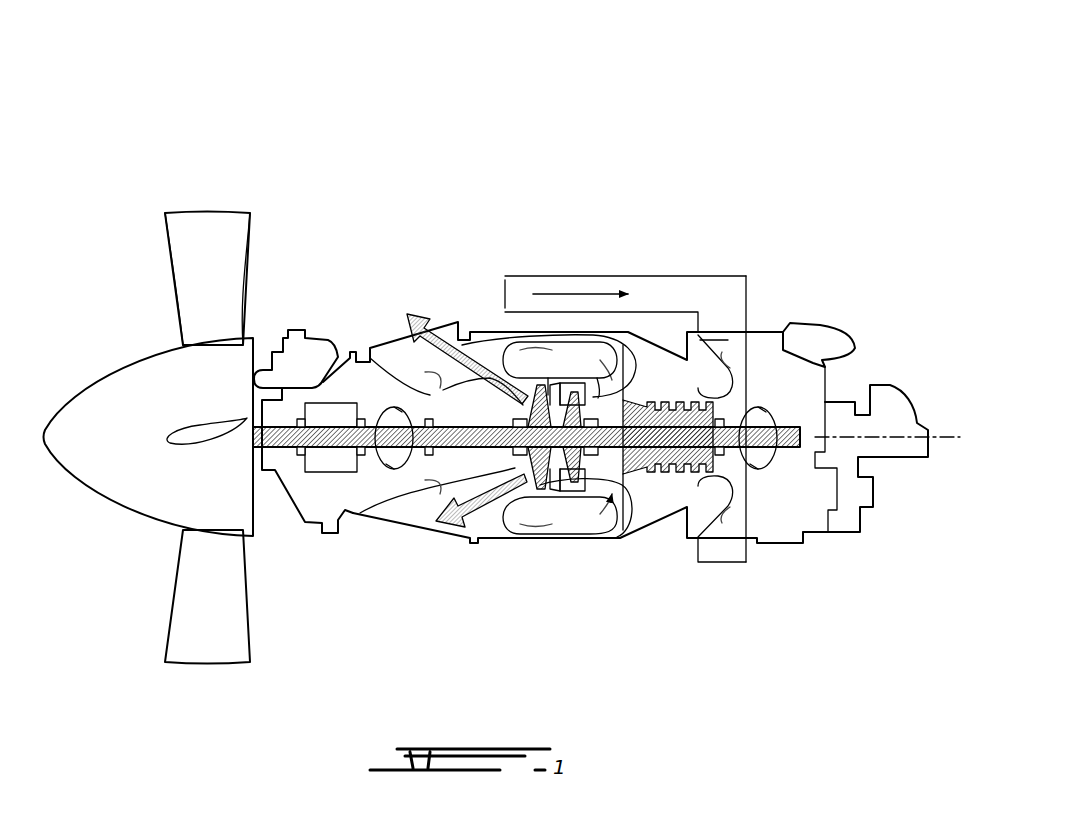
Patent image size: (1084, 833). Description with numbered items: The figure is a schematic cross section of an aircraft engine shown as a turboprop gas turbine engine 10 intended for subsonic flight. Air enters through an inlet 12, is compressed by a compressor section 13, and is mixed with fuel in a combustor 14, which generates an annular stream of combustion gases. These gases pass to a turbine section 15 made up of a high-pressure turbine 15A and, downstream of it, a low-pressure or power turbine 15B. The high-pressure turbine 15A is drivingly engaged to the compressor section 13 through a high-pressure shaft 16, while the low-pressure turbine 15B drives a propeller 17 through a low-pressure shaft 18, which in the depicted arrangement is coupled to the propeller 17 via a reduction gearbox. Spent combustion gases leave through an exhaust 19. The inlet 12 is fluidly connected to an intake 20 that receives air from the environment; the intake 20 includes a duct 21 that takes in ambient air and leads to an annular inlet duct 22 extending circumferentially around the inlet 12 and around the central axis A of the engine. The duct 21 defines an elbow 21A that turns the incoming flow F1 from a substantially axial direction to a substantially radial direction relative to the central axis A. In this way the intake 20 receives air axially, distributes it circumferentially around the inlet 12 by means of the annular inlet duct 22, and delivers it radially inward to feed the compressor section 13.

The gas turbine engine 10 is at (552, 165).
The inlet 12 is at (738, 348).
The compressor section 13 is at (636, 480).
The combustor 14 is at (576, 520).
The turbine section 15 is at (558, 503).
The high-pressure turbine 15A is at (585, 476).
The low-pressure turbine 15B is at (537, 478).
The high-pressure shaft 16 is at (616, 490).
The propeller 17 is at (178, 237).
The low-pressure shaft 18 is at (390, 447).
The exhaust 19 is at (412, 510).
The intake 20 is at (697, 258).
The duct 21 is at (625, 276).
The elbow 21A is at (747, 302).
The annular inlet duct 22 is at (738, 333).
The incoming flow F1 is at (560, 292).
The central axis A is at (940, 440).